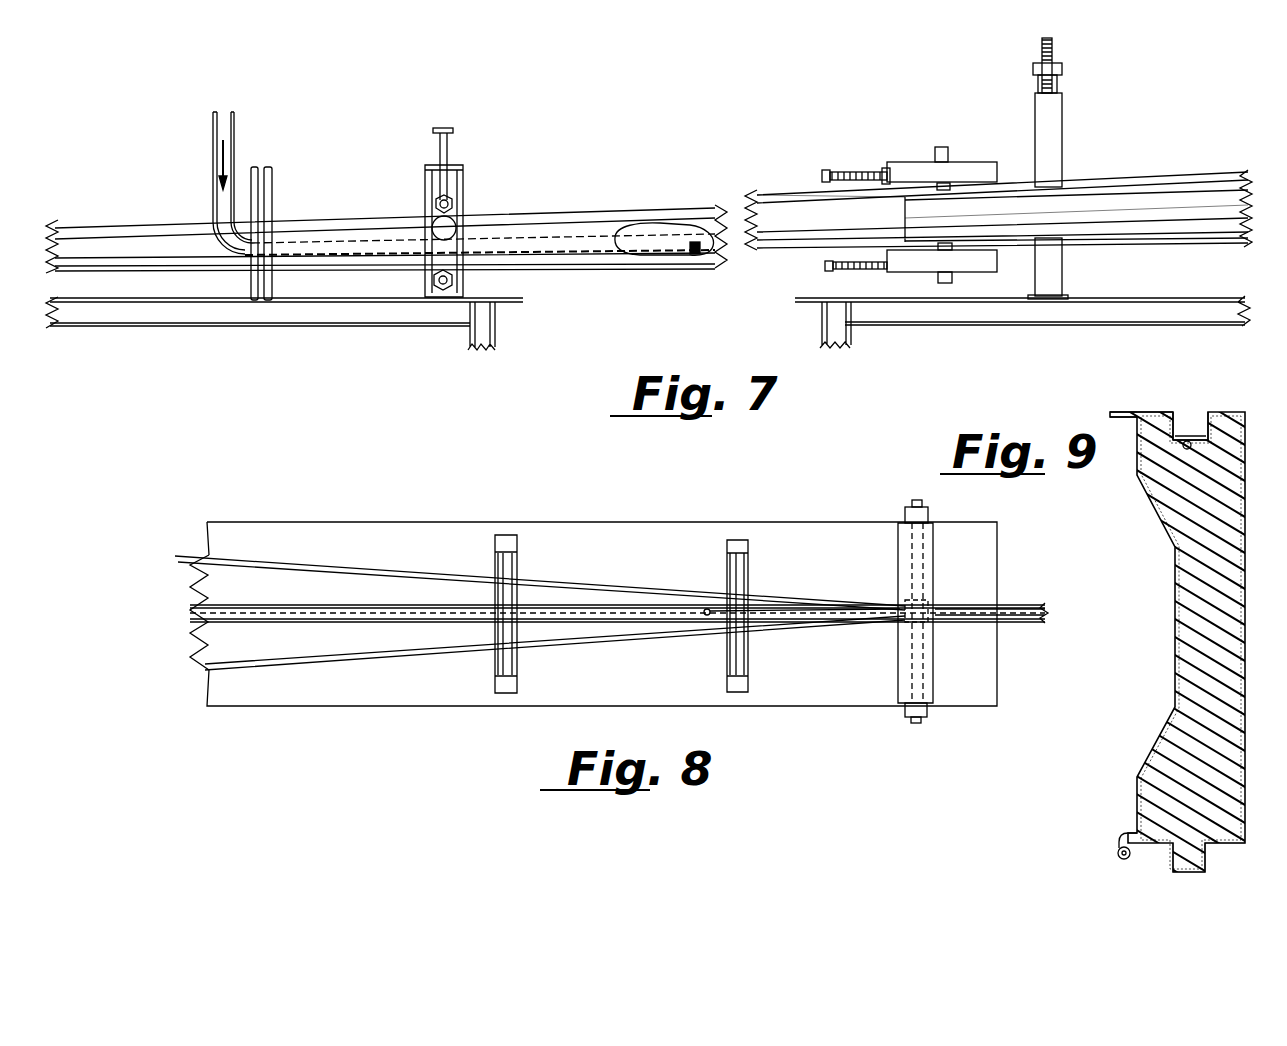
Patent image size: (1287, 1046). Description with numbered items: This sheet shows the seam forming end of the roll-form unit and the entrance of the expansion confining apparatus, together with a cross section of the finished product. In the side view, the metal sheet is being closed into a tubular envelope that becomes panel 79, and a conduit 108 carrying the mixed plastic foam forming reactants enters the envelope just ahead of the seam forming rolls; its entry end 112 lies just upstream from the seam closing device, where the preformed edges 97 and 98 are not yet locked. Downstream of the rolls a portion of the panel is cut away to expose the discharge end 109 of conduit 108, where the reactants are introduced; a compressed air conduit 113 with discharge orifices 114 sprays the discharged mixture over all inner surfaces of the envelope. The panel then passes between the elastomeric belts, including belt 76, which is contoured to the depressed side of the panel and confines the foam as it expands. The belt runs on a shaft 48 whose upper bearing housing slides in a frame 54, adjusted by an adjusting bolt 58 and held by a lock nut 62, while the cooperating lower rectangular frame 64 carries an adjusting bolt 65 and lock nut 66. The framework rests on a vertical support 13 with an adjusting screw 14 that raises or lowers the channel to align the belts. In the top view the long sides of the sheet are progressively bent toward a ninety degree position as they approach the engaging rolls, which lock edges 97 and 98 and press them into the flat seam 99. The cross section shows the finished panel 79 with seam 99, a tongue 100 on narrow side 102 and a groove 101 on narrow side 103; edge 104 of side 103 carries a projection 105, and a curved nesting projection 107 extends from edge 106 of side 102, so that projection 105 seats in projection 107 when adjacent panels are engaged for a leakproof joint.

In FIG. 7, the vertical support 13 is at (1062, 156).
In FIG. 7, the adjusting screw 14 is at (1052, 48).
In FIG. 7, the shaft 48 is at (943, 147).
In FIG. 7, the frame 54 is at (982, 162).
In FIG. 7, the adjusting bolt 58 is at (832, 170).
In FIG. 7, the lock nut 62 is at (884, 168).
In FIG. 7, the lower rectangular frame 64 is at (965, 274).
In FIG. 7, the adjusting bolt 65 is at (825, 265).
In FIG. 7, the lock nut 66 is at (887, 268).
In FIG. 7, the endless belt 76 is at (1058, 222).
In FIG. 7, the panel 79 is at (807, 184).
In FIG. 9, the panel 79 is at (1165, 570).
In FIG. 8, the formed edge 97 is at (637, 643).
In FIG. 9, the formed edge 97 is at (1173, 425).
In FIG. 8, the formed edge 98 is at (637, 585).
In FIG. 9, the formed edge 98 is at (1190, 443).
In FIG. 8, the seam 99 is at (947, 612).
In FIG. 9, the seam 99 is at (1182, 437).
In FIG. 8, the tongue 100 is at (288, 612).
In FIG. 9, the tongue 100 is at (1205, 869).
In FIG. 8, the groove 101 is at (1002, 612).
In FIG. 9, the groove 101 is at (1209, 425).
In FIG. 8, the narrow side 102 is at (237, 605).
In FIG. 9, the narrow side 102 is at (1215, 847).
In FIG. 8, the narrow side 103 is at (1036, 612).
In FIG. 9, the narrow side 103 is at (1166, 412).
In FIG. 9, the edge 104 is at (1142, 412).
In FIG. 9, the projection 105 is at (1112, 412).
In FIG. 9, the edge 106 is at (1129, 856).
In FIG. 9, the curved nesting projection 107 is at (1121, 843).
In FIG. 7, the conduit 108 is at (320, 240).
In FIG. 8, the conduit 108 is at (778, 608).
In FIG. 7, the discharge end 109 is at (692, 234).
In FIG. 7, the entry end 112 is at (233, 110).
In FIG. 8, the entry end 112 is at (707, 609).
In FIG. 7, the compressed air conduit 113 is at (215, 110).
In FIG. 7, the discharge orifice 114 is at (703, 255).